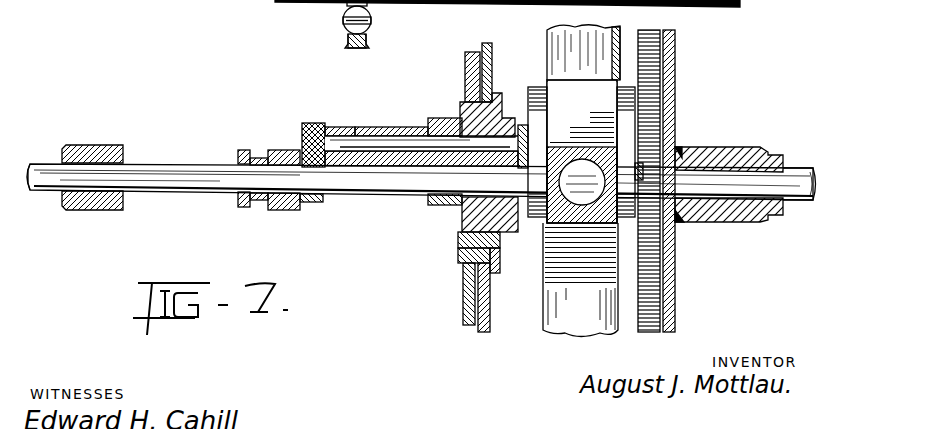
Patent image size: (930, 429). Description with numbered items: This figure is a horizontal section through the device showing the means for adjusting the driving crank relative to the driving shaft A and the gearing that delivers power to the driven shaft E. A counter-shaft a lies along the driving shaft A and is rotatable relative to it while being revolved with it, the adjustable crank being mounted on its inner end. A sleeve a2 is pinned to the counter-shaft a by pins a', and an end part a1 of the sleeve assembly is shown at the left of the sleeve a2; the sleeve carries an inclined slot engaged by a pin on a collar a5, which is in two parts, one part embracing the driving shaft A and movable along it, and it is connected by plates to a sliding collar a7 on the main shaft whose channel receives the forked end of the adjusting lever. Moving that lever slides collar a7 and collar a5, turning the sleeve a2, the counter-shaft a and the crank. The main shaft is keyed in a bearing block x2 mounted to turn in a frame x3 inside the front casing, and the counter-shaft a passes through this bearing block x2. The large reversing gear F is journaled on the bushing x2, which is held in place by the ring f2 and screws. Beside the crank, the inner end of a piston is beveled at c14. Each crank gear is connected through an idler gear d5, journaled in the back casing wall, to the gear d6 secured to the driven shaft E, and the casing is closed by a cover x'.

The driving shaft A is at (163, 165).
The sliding collar a7 is at (270, 212).
The sleeve end cap a1 is at (334, 128).
The sleeve a2 is at (346, 129).
The counter-shaft a is at (421, 131).
The pins a' is at (443, 114).
The collar a5 is at (440, 206).
The large gear F is at (465, 63).
The bearing block x2 is at (472, 222).
The ring f2 is at (468, 257).
The frame x3 is at (467, 270).
The cover x' is at (454, 311).
The beveled inner end of piston c14 is at (600, 112).
The idler gear d5 is at (656, 64).
The gear d6 is at (663, 203).
The driven shaft E is at (803, 170).